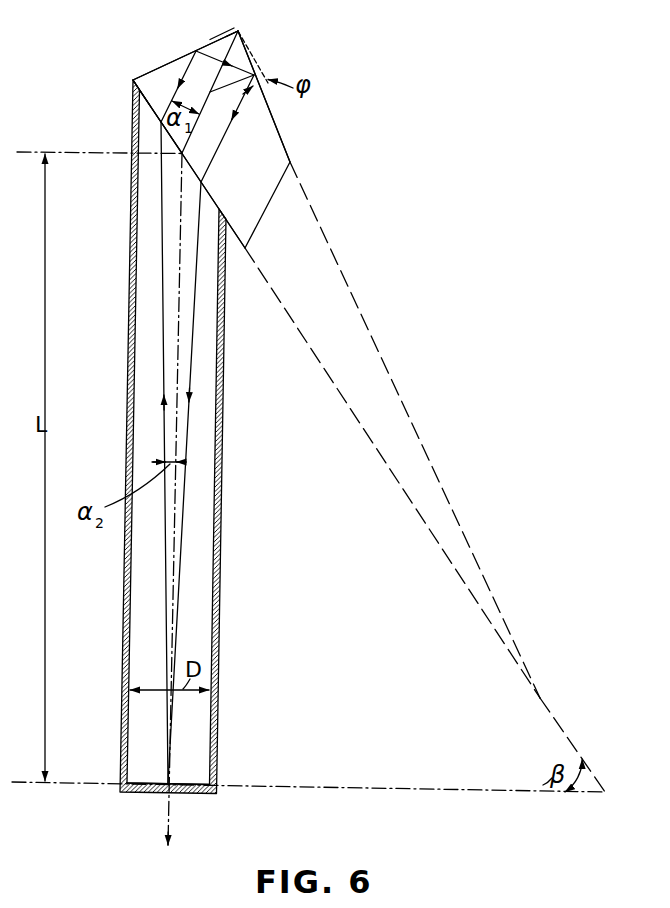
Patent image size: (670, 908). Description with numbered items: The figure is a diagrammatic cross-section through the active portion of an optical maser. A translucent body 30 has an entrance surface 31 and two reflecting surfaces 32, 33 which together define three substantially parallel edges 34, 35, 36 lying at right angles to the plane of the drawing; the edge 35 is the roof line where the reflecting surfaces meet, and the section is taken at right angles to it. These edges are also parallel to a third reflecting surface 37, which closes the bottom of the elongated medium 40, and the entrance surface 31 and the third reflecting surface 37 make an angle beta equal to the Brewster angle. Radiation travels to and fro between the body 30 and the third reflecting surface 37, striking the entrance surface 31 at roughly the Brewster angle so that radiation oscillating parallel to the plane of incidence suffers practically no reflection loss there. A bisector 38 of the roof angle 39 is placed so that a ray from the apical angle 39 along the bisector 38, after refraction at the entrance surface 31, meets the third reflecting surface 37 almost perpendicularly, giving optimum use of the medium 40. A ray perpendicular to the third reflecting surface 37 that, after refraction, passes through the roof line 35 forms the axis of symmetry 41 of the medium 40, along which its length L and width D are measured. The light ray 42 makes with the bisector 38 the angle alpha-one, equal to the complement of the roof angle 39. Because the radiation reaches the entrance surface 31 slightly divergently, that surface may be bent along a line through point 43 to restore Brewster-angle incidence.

The translucent body 30 is at (268, 166).
The entrance surface 31 is at (152, 119).
The reflecting surface 32 is at (155, 69).
The reflecting surface 33 is at (281, 138).
The edge 34 is at (133, 80).
The roof line 35 is at (238, 31).
The edge 36 is at (540, 698).
The third reflecting surface 37 is at (143, 783).
The bisector 38 is at (214, 91).
The roof angle 39 is at (218, 53).
The medium 40 is at (200, 602).
The axis of symmetry 41 is at (178, 375).
The light ray 42 is at (186, 66).
The point 43 is at (181, 156).